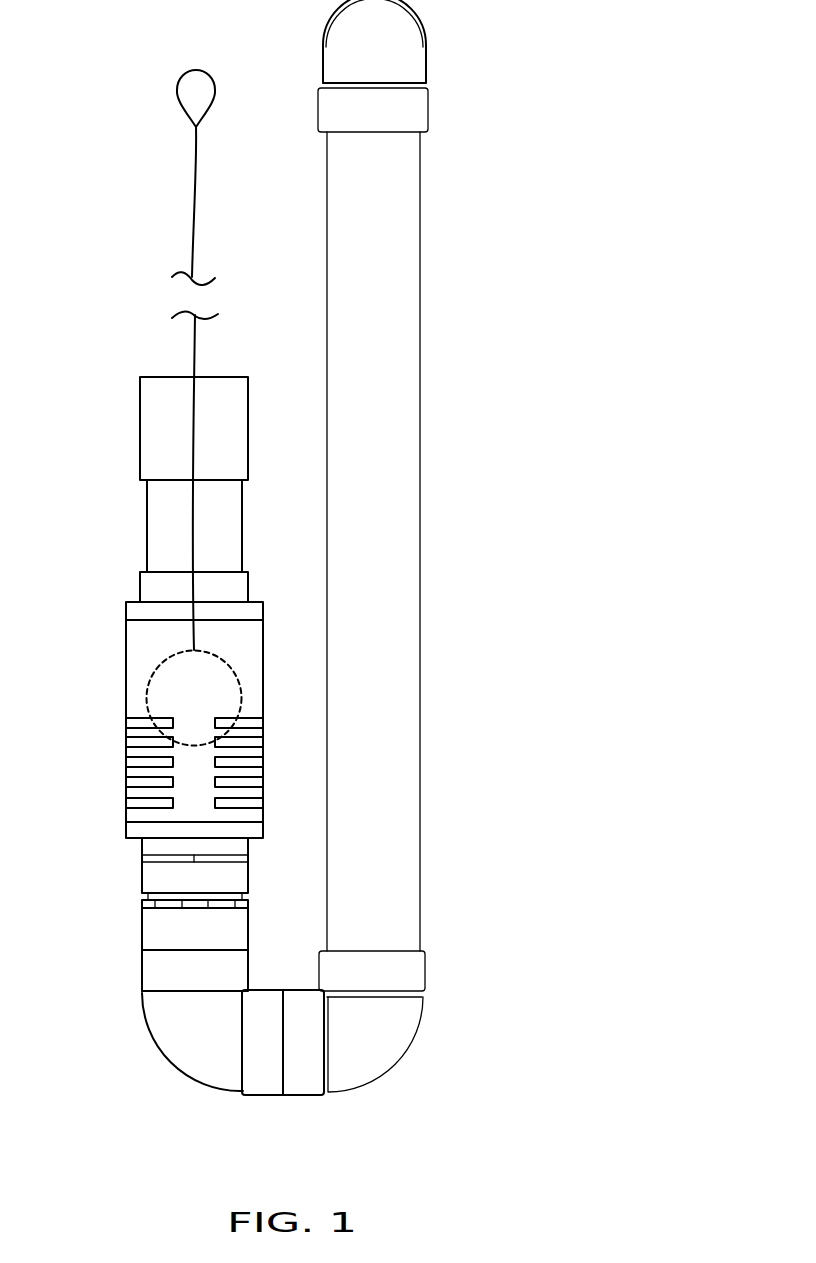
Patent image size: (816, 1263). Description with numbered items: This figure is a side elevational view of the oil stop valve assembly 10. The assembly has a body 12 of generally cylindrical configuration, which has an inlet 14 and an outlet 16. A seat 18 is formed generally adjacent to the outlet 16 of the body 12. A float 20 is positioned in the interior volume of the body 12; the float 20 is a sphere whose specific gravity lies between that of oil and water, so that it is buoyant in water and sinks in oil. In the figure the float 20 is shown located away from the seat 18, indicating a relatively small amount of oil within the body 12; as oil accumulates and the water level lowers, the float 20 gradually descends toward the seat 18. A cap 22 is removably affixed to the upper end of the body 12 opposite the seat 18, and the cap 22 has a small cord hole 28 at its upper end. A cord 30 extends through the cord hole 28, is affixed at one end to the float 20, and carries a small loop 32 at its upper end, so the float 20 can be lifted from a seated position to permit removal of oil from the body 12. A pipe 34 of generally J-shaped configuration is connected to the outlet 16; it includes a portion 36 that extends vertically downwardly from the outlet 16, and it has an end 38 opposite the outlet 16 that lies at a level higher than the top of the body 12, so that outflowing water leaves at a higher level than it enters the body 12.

The oil stop valve assembly 10 is at (543, 199).
The body 12 is at (126, 675).
The inlet 14 is at (126, 781).
The outlet 16 is at (248, 873).
The seat 18 is at (142, 848).
The float 20 is at (236, 670).
The cap 22 is at (250, 418).
The cord hole 28 is at (196, 355).
The cord 30 is at (196, 210).
The loop 32 is at (208, 72).
The pipe 34 is at (142, 977).
The portion 36 is at (248, 968).
The end 38 is at (426, 22).